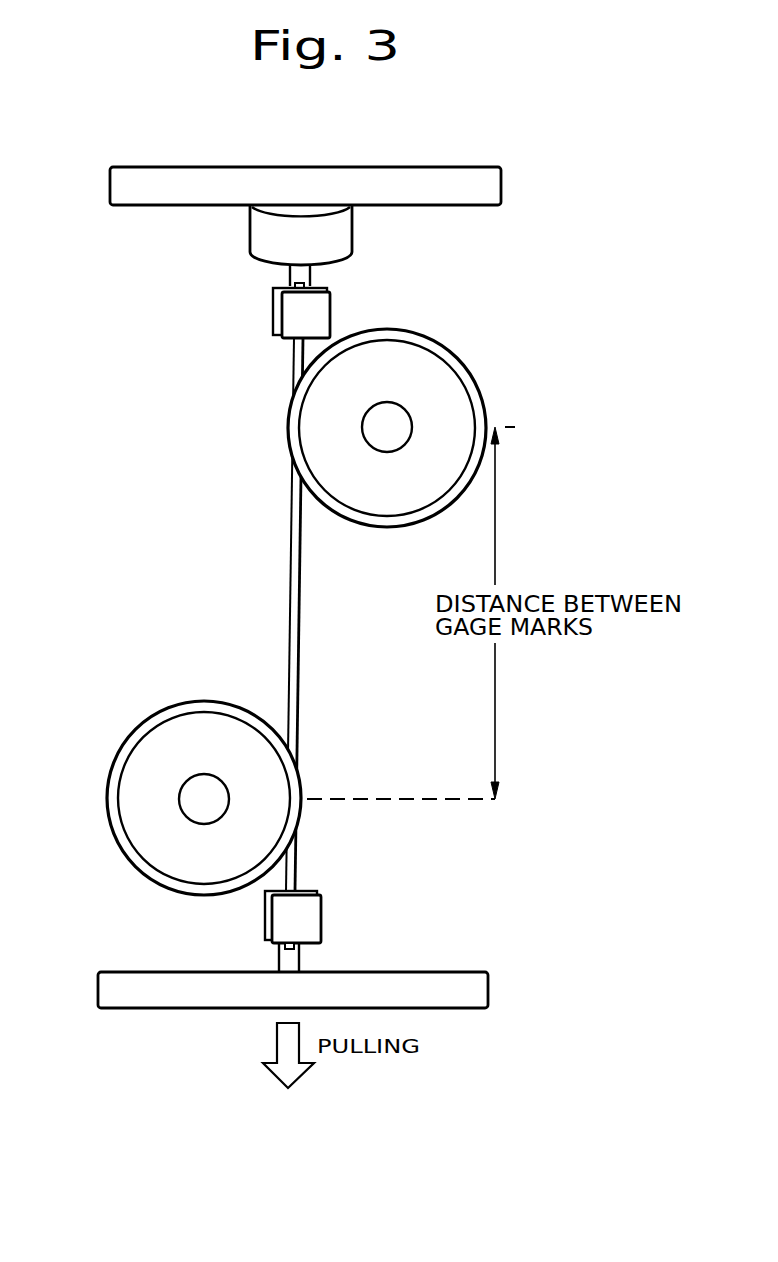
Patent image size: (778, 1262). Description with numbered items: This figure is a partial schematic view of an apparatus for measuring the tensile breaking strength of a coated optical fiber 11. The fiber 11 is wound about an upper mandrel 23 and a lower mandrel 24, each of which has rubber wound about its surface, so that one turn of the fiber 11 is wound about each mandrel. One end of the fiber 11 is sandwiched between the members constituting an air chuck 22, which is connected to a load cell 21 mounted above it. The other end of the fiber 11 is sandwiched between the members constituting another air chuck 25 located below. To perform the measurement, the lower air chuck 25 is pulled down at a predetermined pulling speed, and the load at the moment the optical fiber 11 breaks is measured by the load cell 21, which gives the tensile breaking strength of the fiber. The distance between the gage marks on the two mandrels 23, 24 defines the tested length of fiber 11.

The coated optical fiber 11 is at (288, 581).
The load cell 21 is at (352, 237).
The air chuck 22 is at (322, 322).
The upper mandrel 23 is at (473, 385).
The lower mandrel 24 is at (130, 752).
The air chuck 25 is at (320, 918).